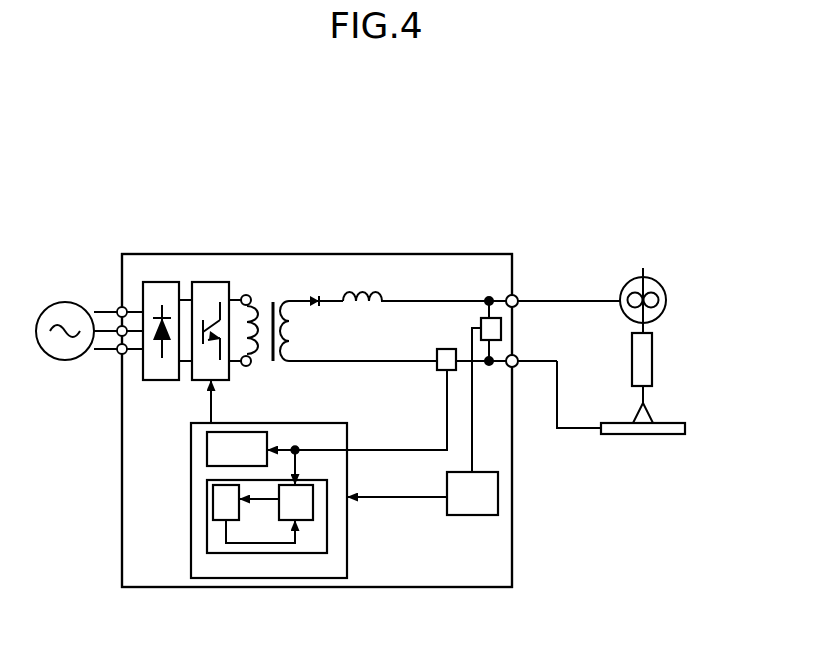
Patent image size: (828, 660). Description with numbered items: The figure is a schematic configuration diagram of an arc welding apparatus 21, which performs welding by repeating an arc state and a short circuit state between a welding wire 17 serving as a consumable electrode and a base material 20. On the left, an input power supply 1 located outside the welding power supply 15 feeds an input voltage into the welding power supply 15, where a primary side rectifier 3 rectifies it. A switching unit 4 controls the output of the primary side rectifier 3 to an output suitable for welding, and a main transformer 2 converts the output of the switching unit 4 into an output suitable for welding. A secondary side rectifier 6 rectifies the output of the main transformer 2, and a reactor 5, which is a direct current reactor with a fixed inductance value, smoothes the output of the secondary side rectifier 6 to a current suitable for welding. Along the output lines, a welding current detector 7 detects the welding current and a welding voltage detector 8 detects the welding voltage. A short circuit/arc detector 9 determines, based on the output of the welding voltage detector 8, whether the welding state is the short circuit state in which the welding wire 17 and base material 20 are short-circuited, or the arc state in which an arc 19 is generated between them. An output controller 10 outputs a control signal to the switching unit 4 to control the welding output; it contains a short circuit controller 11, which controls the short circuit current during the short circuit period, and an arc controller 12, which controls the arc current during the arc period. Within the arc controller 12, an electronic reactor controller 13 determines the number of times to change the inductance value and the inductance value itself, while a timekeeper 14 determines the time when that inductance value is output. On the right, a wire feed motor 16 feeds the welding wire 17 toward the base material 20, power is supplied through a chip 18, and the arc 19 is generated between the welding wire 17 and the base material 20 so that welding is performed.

The input power supply 1 is at (63, 360).
The main transformer 2 is at (270, 293).
The primary side rectifier 3 is at (162, 289).
The switching unit 4 is at (213, 289).
The reactor 5 is at (362, 278).
The secondary side rectifier 6 is at (313, 286).
The welding current detector 7 is at (440, 367).
The welding voltage detector 8 is at (484, 318).
The short circuit/arc detector 9 is at (473, 510).
The output controller 10 is at (196, 564).
The short circuit controller 11 is at (213, 452).
The arc controller 12 is at (323, 545).
The electronic reactor controller 13 is at (307, 515).
The timekeeper 14 is at (218, 508).
The welding power supply 15 is at (155, 578).
The wire feed motor 16 is at (656, 312).
The welding wire 17 is at (649, 268).
The chip 18 is at (651, 362).
The arc 19 is at (650, 415).
The base material 20 is at (675, 434).
The arc welding apparatus 21 is at (422, 233).